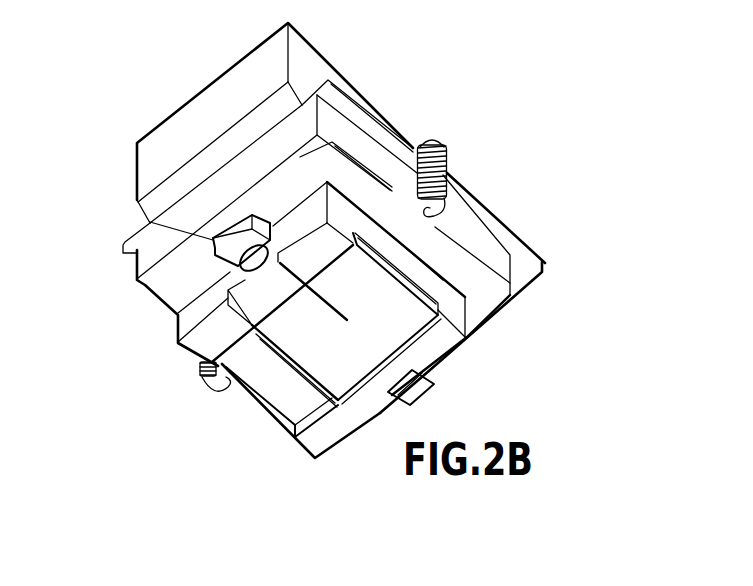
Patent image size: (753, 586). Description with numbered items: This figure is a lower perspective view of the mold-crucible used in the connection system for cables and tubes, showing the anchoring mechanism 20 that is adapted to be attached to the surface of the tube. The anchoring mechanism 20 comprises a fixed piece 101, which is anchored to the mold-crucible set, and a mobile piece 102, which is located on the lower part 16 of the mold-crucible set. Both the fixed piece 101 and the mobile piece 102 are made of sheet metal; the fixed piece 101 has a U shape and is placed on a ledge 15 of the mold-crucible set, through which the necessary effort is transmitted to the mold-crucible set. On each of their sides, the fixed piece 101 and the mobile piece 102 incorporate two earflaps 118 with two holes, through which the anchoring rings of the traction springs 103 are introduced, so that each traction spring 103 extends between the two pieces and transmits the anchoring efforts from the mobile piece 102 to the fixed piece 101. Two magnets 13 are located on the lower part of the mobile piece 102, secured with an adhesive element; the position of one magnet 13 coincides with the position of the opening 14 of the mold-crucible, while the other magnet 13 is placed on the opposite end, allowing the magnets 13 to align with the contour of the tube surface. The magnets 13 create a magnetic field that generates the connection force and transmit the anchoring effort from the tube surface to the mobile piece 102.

The magnet 13 is at (242, 237).
The opening 14 is at (245, 258).
The ledge 15 is at (135, 233).
The lower part 16 is at (333, 217).
The anchoring mechanism 20 is at (572, 268).
The fixed piece 101 is at (346, 106).
The mobile piece 102 is at (483, 307).
The traction spring 103 is at (448, 165).
The earflap 118 is at (443, 220).